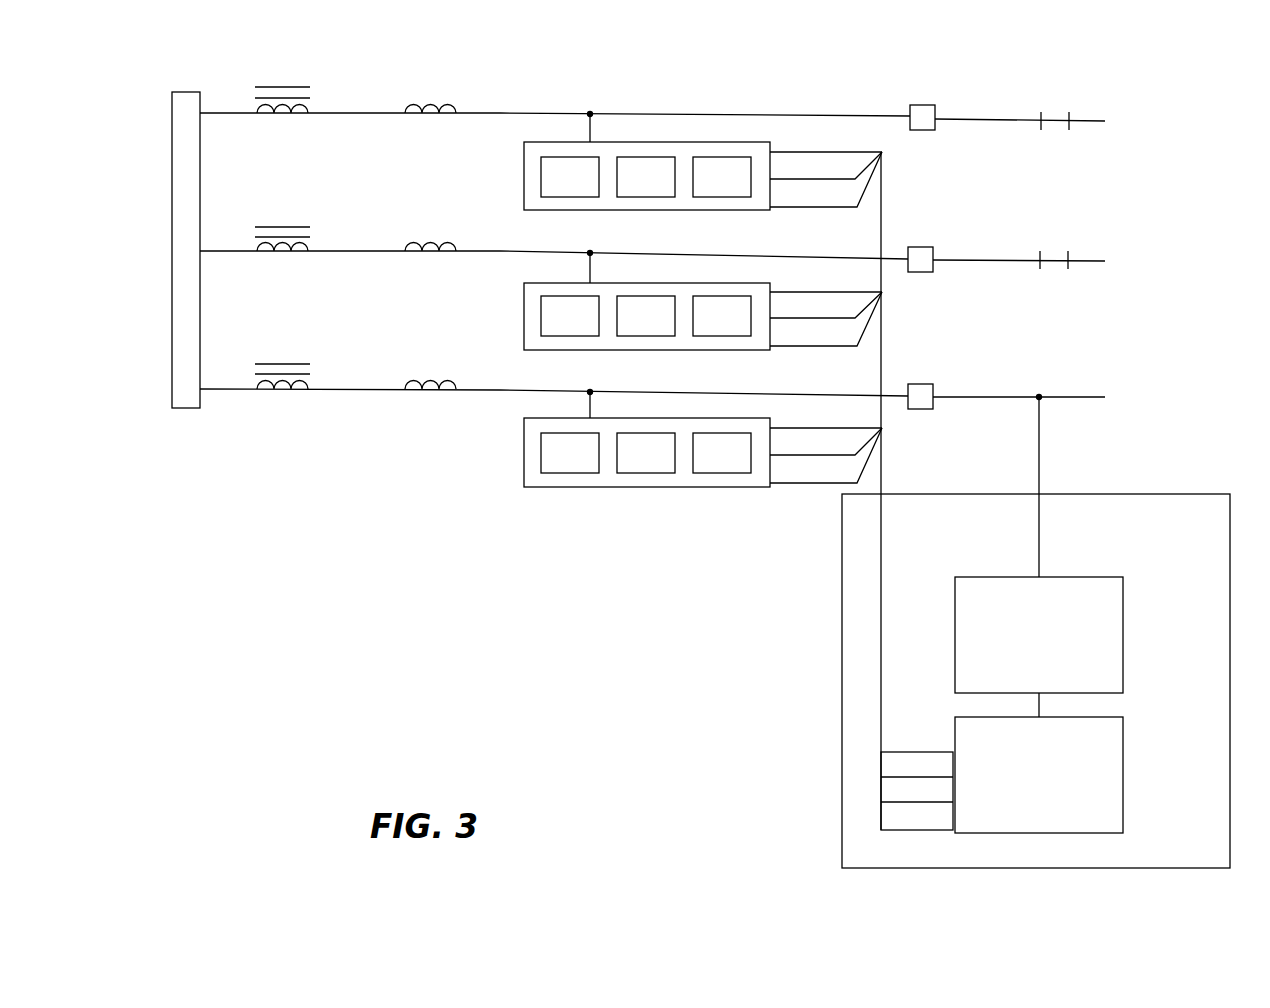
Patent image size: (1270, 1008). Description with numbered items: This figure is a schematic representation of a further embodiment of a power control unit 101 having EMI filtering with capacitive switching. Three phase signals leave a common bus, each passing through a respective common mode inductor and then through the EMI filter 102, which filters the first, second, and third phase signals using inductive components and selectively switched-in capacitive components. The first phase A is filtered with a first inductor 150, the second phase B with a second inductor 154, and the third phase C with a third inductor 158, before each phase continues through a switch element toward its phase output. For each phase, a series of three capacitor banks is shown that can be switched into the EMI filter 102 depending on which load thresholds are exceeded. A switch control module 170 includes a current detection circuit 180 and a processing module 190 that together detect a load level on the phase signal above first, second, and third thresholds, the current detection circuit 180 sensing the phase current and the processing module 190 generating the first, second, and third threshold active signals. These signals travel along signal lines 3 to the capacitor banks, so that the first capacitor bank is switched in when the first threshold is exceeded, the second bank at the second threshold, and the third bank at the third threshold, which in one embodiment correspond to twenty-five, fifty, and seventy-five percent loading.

The power distribution system 101 is at (679, 62).
The EMI filter 102 is at (463, 295).
The first inductor 150 is at (418, 112).
The second inductor 154 is at (418, 250).
The third inductor 158 is at (418, 388).
The threshold signal line 3 is at (868, 657).
The switch control module 170 is at (1217, 594).
The current detection circuit 180 is at (1062, 681).
The processing module 190 is at (1062, 819).